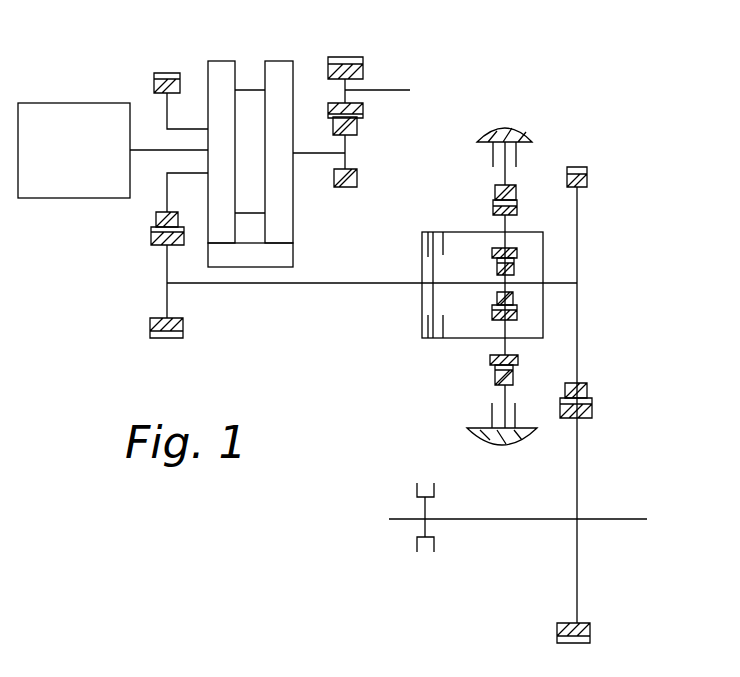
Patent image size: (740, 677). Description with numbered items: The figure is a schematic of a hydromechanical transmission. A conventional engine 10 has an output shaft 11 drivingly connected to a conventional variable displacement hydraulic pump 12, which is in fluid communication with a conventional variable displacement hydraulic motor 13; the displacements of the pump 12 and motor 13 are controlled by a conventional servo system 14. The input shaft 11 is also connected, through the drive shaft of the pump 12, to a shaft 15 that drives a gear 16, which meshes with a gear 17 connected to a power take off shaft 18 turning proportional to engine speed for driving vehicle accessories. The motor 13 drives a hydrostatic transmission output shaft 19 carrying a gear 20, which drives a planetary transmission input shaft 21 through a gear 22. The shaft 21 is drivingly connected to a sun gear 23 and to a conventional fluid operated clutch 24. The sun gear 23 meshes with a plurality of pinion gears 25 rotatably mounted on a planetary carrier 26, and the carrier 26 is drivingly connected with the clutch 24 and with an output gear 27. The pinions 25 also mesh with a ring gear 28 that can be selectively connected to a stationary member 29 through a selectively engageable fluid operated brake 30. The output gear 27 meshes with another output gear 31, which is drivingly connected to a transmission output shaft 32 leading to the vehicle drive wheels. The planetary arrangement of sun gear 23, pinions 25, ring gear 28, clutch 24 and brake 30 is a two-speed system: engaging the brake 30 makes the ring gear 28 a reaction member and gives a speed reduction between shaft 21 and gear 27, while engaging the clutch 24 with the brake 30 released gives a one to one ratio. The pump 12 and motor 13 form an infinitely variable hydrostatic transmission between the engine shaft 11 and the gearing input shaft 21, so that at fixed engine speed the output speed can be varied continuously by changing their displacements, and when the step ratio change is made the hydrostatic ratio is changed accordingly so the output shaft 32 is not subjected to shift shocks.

The engine 10 is at (107, 115).
The output shaft 11 is at (148, 150).
The variable displacement hydraulic pump 12 is at (293, 216).
The variable displacement hydraulic motor 13 is at (220, 72).
The servo system 14 is at (293, 254).
The shaft 15 is at (312, 153).
The gear 16 is at (357, 127).
The gear 17 is at (363, 112).
The power take off shaft 18 is at (410, 90).
The hydrostatic transmission output shaft 19 is at (177, 174).
The gear 20 is at (156, 217).
The planetary transmission input shaft 21 is at (325, 283).
The gear 22 is at (173, 338).
The sun gear 23 is at (497, 270).
The fluid operated clutch 24 is at (425, 243).
The pinion gears 25 is at (493, 210).
The planetary carrier 26 is at (528, 340).
The output gear 27 is at (587, 388).
The ring gear 28 is at (516, 190).
The stationary member 29 is at (520, 130).
The fluid operated brake 30 is at (495, 150).
The output gear 31 is at (592, 410).
The transmission output shaft 32 is at (638, 519).